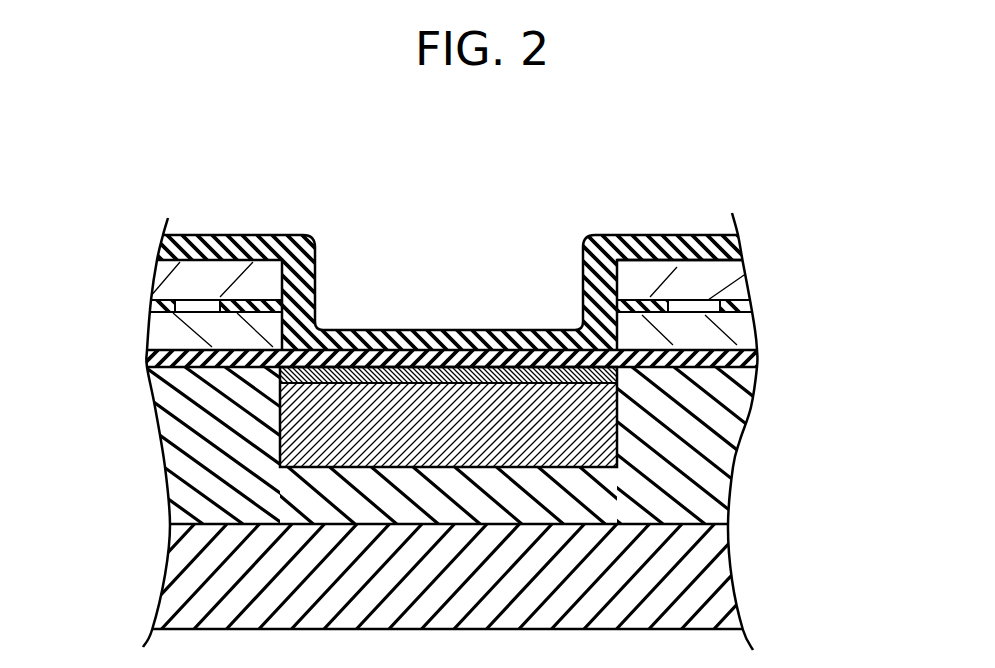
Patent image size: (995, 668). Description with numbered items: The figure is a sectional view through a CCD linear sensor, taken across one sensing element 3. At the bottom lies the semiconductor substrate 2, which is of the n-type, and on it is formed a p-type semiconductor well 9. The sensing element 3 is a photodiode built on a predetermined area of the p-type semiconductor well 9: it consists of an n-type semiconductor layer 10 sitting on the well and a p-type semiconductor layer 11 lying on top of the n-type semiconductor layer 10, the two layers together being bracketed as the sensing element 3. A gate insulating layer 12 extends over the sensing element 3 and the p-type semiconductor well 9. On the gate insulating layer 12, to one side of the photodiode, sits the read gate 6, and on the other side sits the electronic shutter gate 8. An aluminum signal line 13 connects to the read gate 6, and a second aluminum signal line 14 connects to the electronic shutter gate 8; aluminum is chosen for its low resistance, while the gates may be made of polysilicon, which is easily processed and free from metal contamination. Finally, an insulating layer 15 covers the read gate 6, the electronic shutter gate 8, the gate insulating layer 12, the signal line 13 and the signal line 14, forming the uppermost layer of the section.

The semiconductor substrate 2 is at (736, 585).
The sensing element 3 is at (868, 372).
The read gate 6 is at (145, 322).
The electronic shutter gate 8 is at (757, 328).
The p-type semiconductor well 9 is at (733, 478).
The n-type semiconductor layer 10 is at (620, 428).
The p-type semiconductor layer 11 is at (620, 382).
The gate insulating layer 12 is at (145, 362).
The aluminum signal line 13 is at (236, 250).
The aluminum signal line 14 is at (667, 250).
The insulating layer 15 is at (745, 253).